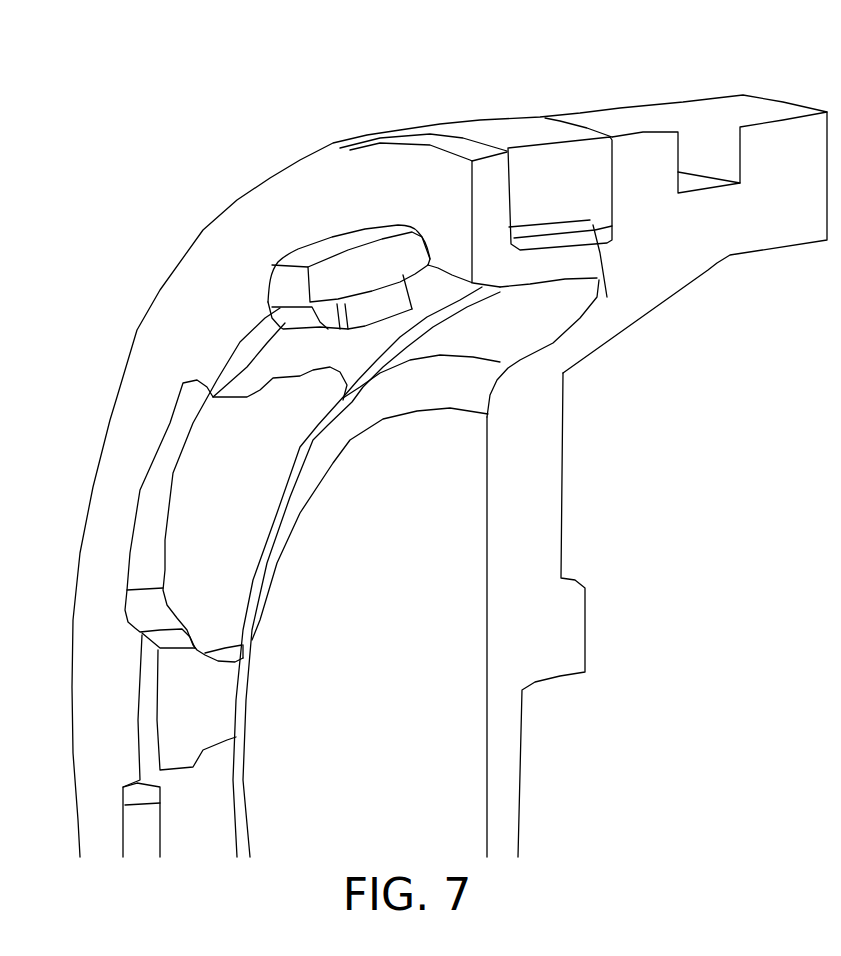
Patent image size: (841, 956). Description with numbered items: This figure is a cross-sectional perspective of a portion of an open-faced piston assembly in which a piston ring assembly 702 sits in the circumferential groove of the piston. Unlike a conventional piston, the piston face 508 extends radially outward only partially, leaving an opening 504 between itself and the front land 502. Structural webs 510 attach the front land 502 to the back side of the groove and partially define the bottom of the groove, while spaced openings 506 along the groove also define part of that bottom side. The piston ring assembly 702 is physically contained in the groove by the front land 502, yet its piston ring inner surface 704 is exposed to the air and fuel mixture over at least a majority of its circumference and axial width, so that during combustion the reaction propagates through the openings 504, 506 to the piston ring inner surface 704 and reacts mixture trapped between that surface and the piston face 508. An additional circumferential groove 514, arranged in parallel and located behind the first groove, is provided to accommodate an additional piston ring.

The front land 502 is at (320, 176).
The opening 504 is at (536, 303).
The spaced openings 506 is at (217, 520).
The piston face 508 is at (370, 669).
The structural webs 510 is at (297, 357).
The additional circumferential groove 514 is at (700, 150).
The piston ring assembly 702 is at (540, 170).
The piston ring inner surface 704 is at (607, 297).